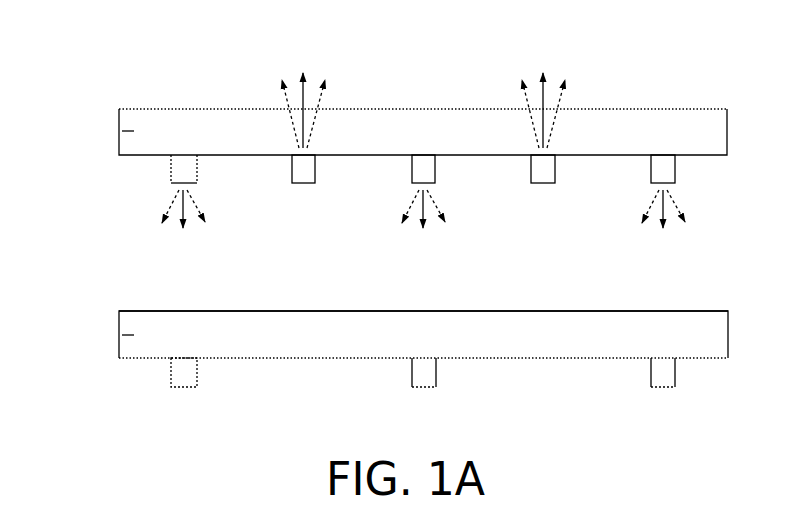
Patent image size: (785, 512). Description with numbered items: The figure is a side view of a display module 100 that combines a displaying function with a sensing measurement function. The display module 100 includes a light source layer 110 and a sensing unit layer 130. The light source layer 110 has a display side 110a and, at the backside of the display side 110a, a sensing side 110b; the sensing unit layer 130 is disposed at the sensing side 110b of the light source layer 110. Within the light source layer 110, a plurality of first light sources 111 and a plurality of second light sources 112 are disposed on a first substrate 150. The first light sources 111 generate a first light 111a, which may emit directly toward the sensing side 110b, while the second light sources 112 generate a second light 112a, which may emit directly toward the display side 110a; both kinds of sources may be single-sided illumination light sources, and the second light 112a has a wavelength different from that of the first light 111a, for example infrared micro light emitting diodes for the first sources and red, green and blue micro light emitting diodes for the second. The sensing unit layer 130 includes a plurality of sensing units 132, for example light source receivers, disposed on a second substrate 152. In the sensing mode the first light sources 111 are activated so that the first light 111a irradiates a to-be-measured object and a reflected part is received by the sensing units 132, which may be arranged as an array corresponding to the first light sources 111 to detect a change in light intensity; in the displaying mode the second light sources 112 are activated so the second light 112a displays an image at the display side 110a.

The display module 100 is at (137, 41).
The light source layer 110 is at (387, 155).
The display side 110a is at (128, 73).
The sensing side 110b is at (128, 275).
The first substrate 150 is at (129, 131).
The first light sources 111 is at (197, 166).
The first light 111a is at (200, 206).
The second light sources 112 is at (313, 166).
The second light 112a is at (321, 100).
The sensing unit layer 130 is at (387, 358).
The second substrate 152 is at (129, 335).
The sensing units 132 is at (188, 372).